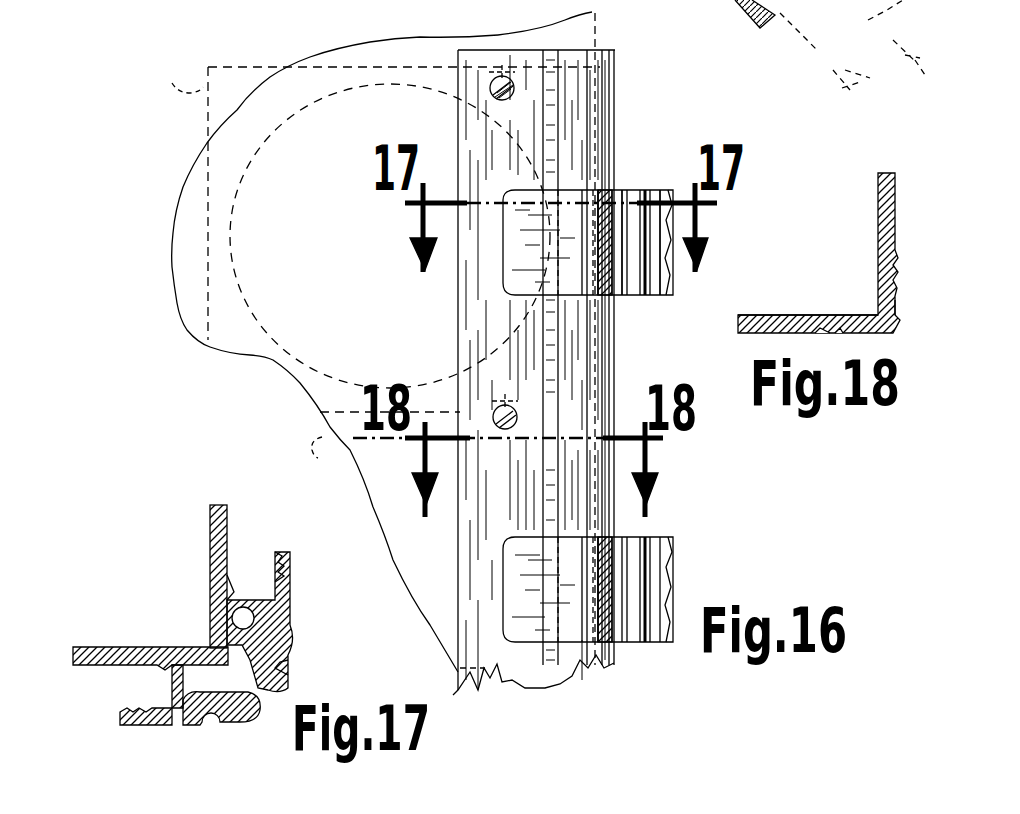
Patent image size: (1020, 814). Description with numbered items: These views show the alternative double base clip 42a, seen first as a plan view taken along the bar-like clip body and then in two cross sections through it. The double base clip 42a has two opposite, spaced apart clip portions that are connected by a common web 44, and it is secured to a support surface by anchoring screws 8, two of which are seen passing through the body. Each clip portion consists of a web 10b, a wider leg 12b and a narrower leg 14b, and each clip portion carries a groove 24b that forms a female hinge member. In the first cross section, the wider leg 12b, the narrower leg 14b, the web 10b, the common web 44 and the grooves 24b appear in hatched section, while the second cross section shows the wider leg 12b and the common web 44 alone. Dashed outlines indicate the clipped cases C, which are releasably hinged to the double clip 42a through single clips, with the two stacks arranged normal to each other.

In FIG. 16, the anchoring screws 8 is at (553, 90).
In FIG. 16, the alternative double base clip 42a is at (537, 50).
In FIG. 16, the cases C is at (381, 342).
In FIG. 16, the groove female hinge member 24b is at (600, 200).
In FIG. 17, the groove female hinge member 24b is at (212, 722).
In FIG. 16, the common web 44 is at (655, 232).
In FIG. 17, the common web 44 is at (212, 622).
In FIG. 18, the common web 44 is at (893, 314).
In FIG. 16, the narrower leg 14b is at (586, 298).
In FIG. 17, the narrower leg 14b is at (290, 572).
In FIG. 17, the wider leg 12b is at (210, 535).
In FIG. 18, the wider leg 12b is at (900, 190).
In FIG. 17, the web 10b is at (172, 690).